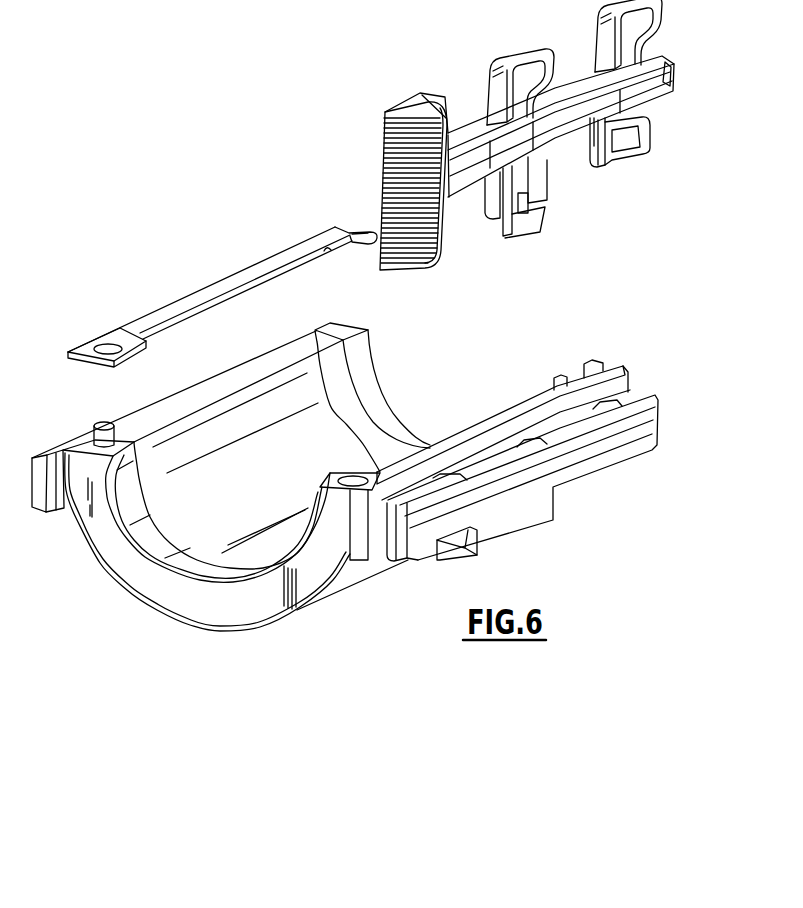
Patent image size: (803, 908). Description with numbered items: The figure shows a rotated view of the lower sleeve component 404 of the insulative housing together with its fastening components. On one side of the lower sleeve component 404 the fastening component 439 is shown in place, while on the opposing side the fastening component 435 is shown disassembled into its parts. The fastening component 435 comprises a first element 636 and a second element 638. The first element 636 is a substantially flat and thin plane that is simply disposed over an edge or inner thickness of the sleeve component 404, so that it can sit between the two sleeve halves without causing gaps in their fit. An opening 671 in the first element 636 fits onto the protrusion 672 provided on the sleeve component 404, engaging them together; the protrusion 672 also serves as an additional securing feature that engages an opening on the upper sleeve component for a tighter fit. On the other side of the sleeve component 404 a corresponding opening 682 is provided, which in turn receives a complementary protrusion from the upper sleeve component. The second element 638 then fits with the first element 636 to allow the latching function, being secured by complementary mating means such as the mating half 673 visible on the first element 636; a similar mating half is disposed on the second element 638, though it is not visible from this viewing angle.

The lower sleeve component 404 is at (197, 610).
The fastening component 435 is at (597, 168).
The fastening component 439 is at (593, 453).
The first element 636 is at (187, 300).
The second element 638 is at (478, 135).
The opening 671 is at (108, 346).
The protrusion 672 is at (100, 438).
The mating means 673 is at (362, 231).
The opening 682 is at (350, 472).